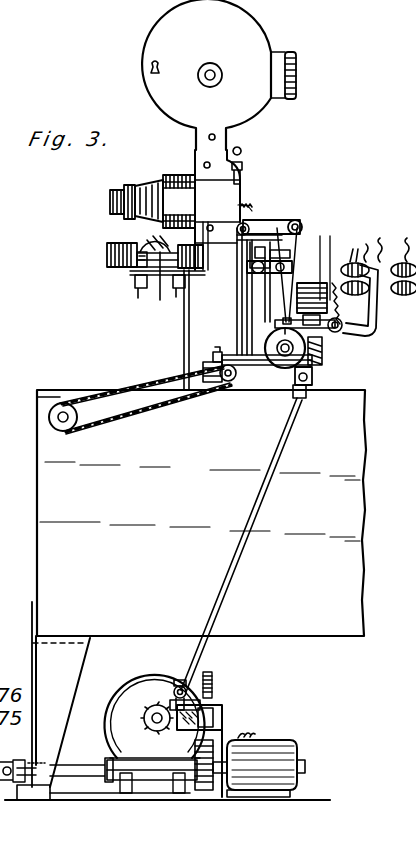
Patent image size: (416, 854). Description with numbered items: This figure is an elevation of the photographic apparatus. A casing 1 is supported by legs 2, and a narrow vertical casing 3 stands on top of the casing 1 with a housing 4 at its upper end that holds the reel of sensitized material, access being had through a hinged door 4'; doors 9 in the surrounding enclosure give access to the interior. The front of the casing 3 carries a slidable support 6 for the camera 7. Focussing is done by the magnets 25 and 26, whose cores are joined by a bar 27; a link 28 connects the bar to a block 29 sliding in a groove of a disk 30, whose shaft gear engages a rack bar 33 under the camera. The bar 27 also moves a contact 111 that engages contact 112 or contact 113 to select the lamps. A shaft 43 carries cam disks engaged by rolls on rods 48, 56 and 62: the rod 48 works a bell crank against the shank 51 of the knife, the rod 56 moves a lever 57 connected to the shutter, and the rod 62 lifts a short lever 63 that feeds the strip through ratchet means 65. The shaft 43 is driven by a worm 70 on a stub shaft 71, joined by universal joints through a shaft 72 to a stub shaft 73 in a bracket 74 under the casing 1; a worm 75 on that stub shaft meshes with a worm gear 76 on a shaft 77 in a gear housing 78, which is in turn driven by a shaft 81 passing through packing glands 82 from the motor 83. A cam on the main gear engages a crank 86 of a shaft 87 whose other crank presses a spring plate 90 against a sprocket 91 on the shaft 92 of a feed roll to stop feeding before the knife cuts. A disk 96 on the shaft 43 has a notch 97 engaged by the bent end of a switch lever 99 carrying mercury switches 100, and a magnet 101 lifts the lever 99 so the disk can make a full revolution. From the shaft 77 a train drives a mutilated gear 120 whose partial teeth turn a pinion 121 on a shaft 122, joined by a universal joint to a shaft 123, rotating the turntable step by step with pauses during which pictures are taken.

The hinged door 4' is at (200, 75).
The housing 4 is at (282, 59).
The camera 7 is at (152, 186).
The slidable support 6 is at (175, 180).
The rack bar 33 is at (178, 215).
The ratchet means 65 is at (243, 216).
The lever 57 is at (272, 227).
The short lever 63 is at (300, 227).
The shank 51 is at (300, 238).
The rod 62 is at (292, 255).
The rod 56 is at (287, 273).
The mercury switches 100 is at (356, 278).
The switch lever 99 is at (366, 304).
The magnet 101 is at (350, 335).
The rod 48 is at (283, 292).
The notch 97 is at (284, 320).
The disk 96 is at (280, 340).
The worm 70 is at (300, 345).
The shaft 43 is at (322, 352).
The crank 86 is at (270, 366).
The stub shaft 71 is at (308, 385).
The shaft 87 is at (218, 352).
The narrow vertical casing 3 is at (208, 315).
The shaft 92 is at (232, 384).
The spring plate 90 is at (188, 398).
The sprocket 91 is at (226, 390).
The casing 1 is at (46, 489).
The legs 2 is at (37, 658).
The shaft 72 is at (241, 566).
The gear housing 78 is at (133, 688).
The shaft 77 is at (148, 712).
The worm gear 76 is at (150, 724).
The stub shaft 73 is at (174, 690).
The mutilated gear 120 is at (212, 676).
The worm 75 is at (213, 688).
The bracket 74 is at (222, 706).
The packing glands 82 is at (195, 762).
The pinion 121 is at (212, 742).
The shaft 122 is at (82, 775).
The shaft 81 is at (266, 765).
The motor 83 is at (292, 752).
The shaft 123 is at (17, 762).
The disk 30 is at (107, 254).
The magnet 25 is at (203, 263).
The magnet 26 is at (107, 263).
The block 29 is at (140, 240).
The link 28 is at (137, 266).
The contact 113 is at (136, 287).
The bar 27 is at (160, 272).
The contact 112 is at (175, 280).
The contact 111 is at (172, 293).
The doors 9 is at (410, 355).